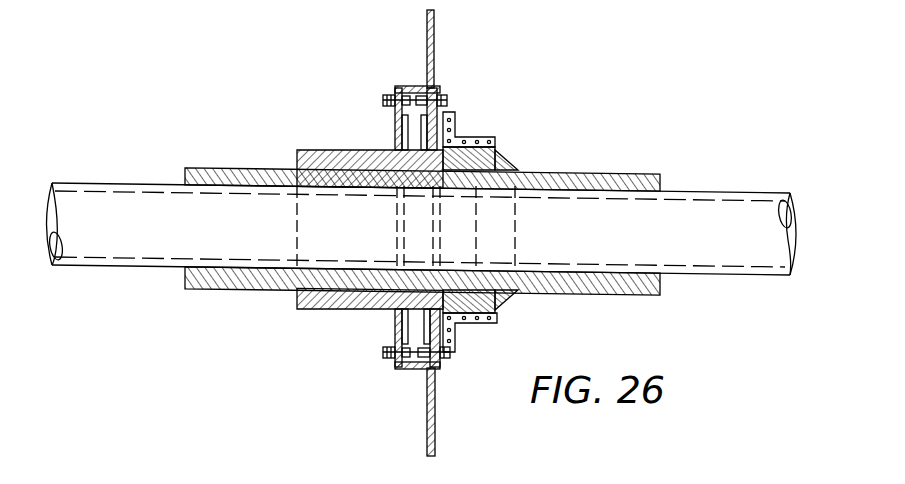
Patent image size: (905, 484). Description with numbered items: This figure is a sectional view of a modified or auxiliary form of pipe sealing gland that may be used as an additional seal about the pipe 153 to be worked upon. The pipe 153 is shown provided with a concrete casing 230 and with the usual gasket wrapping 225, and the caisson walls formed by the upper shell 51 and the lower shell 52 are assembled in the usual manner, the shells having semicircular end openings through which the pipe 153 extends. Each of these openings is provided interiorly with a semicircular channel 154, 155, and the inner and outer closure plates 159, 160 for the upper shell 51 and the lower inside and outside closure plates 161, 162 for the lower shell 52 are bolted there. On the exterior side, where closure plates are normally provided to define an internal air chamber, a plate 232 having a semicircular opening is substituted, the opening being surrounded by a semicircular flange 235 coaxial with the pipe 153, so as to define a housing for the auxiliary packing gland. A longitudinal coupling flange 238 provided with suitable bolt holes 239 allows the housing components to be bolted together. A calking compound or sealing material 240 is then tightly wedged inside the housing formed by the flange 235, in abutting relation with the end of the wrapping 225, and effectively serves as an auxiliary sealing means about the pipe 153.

The upper shell 51 is at (436, 432).
The lower shell 52 is at (436, 40).
The pipe 153 is at (718, 194).
The semicircular channel 154 is at (402, 93).
The semicircular channel 155 is at (400, 368).
The inner closure plate 159 is at (395, 128).
The outer closure plate 160 is at (440, 86).
The lower inside closure plate 161 is at (395, 324).
The lower outside closure plate 162 is at (437, 380).
The gasket wrapping 225 is at (308, 150).
The concrete casing 230 is at (638, 176).
The plate 232 is at (440, 100).
The semicircular flange 235 is at (452, 126).
The longitudinal coupling flange 238 is at (466, 150).
The bolt holes 239 is at (489, 142).
The sealing material 240 is at (506, 163).